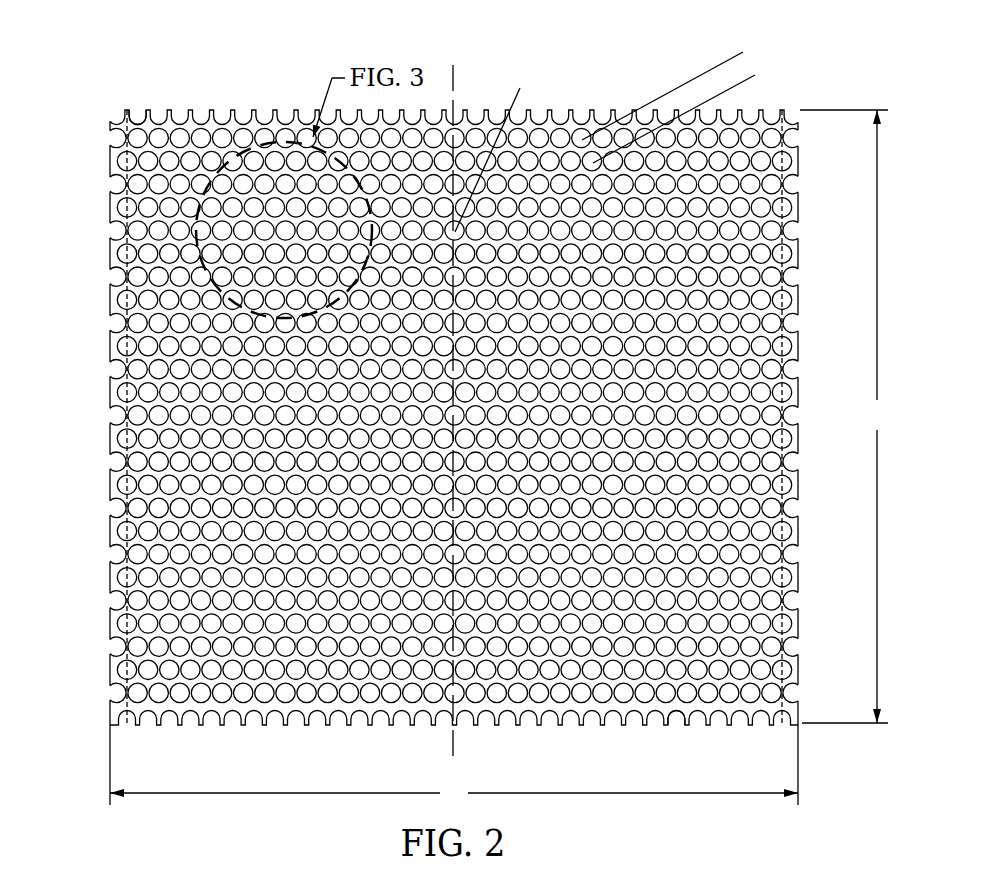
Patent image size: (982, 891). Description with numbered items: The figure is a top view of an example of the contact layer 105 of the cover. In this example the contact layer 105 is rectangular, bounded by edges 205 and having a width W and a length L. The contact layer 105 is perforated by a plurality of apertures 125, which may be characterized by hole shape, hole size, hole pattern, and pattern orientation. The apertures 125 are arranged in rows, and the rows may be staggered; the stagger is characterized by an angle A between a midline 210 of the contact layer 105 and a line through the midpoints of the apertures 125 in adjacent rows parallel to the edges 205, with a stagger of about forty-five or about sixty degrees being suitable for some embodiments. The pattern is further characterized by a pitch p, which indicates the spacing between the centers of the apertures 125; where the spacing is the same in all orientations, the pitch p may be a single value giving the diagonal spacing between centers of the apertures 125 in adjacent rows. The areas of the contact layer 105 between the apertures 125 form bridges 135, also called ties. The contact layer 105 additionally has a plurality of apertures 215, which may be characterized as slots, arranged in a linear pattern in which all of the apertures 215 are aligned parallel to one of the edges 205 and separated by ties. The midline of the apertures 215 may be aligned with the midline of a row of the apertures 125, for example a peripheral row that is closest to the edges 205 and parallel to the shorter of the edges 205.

The contact layer 105 is at (453, 401).
The apertures 125 is at (130, 440).
The bridges 135 is at (147, 131).
The edges 205 is at (558, 110).
The midline 210 is at (453, 752).
The apertures 215 is at (127, 188).
The angle A is at (518, 91).
The pitch p is at (747, 80).
The width W is at (844, 416).
The length L is at (454, 765).